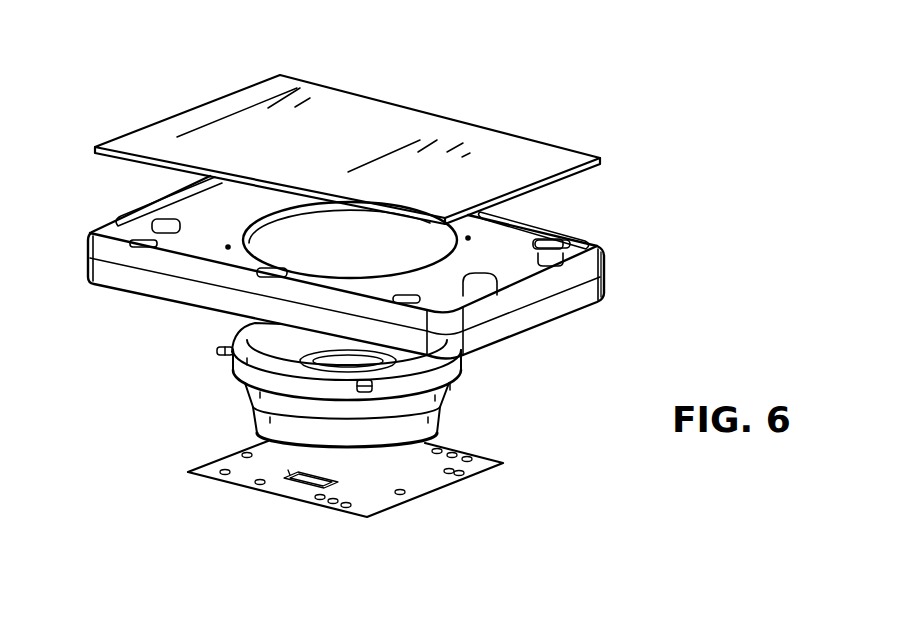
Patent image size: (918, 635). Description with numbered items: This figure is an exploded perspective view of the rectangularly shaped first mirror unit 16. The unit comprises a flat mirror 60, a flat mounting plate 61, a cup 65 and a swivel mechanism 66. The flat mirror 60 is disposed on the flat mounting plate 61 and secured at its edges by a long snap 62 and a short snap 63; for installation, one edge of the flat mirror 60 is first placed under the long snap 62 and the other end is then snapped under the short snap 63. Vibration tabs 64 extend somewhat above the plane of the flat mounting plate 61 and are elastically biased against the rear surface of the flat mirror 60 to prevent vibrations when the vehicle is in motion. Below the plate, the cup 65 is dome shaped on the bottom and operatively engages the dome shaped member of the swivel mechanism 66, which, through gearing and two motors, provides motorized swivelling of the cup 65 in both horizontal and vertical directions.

The first mirror unit 16 is at (172, 88).
The flat mirror 60 is at (493, 147).
The flat mounting plate 61 is at (227, 284).
The long snap 62 is at (163, 207).
The short snap 63 is at (606, 279).
The vibration tabs 64 is at (182, 232).
The cup 65 is at (457, 378).
The swivel mechanism 66 is at (447, 422).